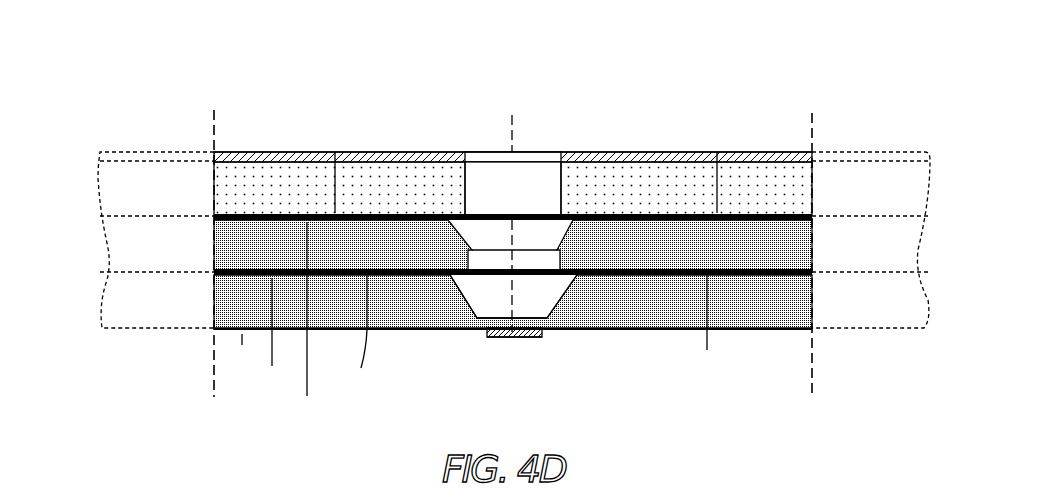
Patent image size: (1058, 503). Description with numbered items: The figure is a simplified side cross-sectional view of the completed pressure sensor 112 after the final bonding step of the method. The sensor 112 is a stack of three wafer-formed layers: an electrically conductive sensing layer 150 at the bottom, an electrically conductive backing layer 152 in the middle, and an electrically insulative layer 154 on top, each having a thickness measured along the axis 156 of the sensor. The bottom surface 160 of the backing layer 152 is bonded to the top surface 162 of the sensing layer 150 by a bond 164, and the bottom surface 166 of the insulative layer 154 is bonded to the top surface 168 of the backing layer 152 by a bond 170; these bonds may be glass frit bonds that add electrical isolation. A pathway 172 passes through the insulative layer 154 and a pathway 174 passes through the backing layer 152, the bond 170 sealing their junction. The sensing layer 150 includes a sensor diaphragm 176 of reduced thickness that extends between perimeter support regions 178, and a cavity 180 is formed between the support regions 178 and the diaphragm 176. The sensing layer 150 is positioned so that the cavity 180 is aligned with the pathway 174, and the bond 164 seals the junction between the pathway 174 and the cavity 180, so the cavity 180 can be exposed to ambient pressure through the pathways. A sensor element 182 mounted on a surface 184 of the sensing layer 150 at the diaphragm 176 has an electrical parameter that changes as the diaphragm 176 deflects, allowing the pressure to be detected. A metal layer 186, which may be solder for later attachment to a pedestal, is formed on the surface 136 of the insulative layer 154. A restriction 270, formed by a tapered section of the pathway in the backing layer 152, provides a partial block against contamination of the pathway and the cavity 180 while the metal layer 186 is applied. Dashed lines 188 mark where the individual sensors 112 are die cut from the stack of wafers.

The pressure sensor 112 is at (809, 74).
The surface of the electrically insulative layer 136 is at (241, 153).
The electrically conductive sensing layer 150 is at (798, 298).
The electrically conductive backing layer 152 is at (798, 243).
The electrically insulative layer 154 is at (797, 176).
The axis of the pressure sensor 156 is at (511, 188).
The bottom surface of the backing layer 160 is at (272, 278).
The top surface of the sensing layer 162 is at (239, 267).
The bond 164 is at (528, 334).
The bottom surface of the electrically insulative layer 166 is at (307, 222).
The top surface of the backing layer 168 is at (242, 213).
The bond 170 is at (335, 150).
The pathway through the electrically insulative layer 172 is at (485, 173).
The pathway through the backing layer 174 is at (525, 230).
The sensor diaphragm 176 is at (497, 338).
The perimeter support regions 178 is at (450, 300).
The cavity 180 is at (537, 300).
The sensor element 182 is at (510, 338).
The surface of the sensing layer 184 is at (242, 336).
The metal layer 186 is at (623, 152).
The lines 188 is at (213, 350).
The restriction 270 is at (562, 252).